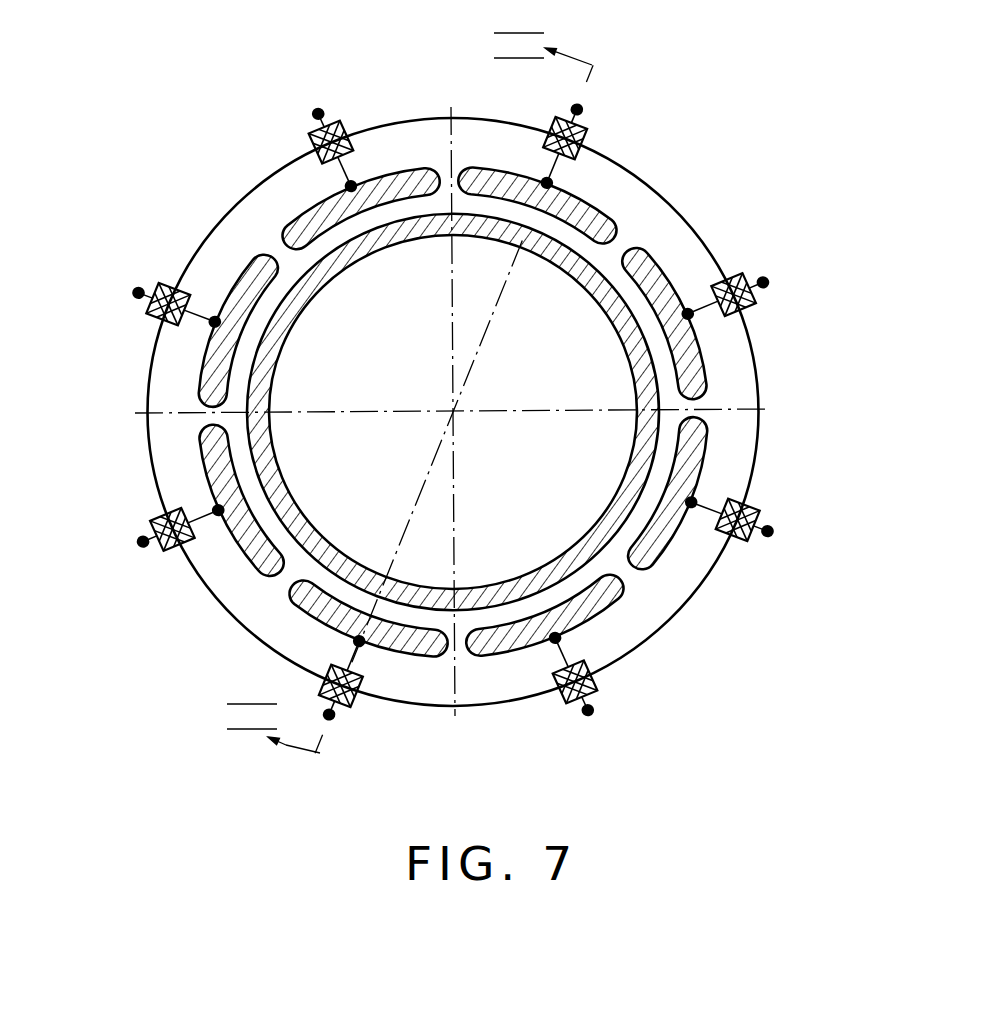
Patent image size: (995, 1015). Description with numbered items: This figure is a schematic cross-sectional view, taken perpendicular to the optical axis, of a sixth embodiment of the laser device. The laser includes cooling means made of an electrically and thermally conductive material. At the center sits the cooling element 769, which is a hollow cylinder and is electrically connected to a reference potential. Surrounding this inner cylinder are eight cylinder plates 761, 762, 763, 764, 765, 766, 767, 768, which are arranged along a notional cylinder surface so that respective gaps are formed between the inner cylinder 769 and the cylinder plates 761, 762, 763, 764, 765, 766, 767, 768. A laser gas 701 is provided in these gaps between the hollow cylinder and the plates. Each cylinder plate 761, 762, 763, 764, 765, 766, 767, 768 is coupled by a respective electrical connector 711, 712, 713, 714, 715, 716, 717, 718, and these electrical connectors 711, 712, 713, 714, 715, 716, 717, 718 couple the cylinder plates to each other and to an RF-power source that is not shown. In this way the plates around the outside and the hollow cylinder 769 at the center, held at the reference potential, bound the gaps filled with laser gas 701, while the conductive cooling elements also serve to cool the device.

The laser gas 701 is at (607, 244).
The cooling element 769 is at (626, 473).
The cylinder plate 761 is at (662, 266).
The cylinder plate 762 is at (708, 447).
The cylinder plate 763 is at (608, 606).
The cylinder plate 764 is at (411, 648).
The cylinder plate 765 is at (236, 540).
The cylinder plate 766 is at (203, 365).
The cylinder plate 767 is at (300, 215).
The cylinder plate 768 is at (489, 168).
The electrical connector 711 is at (797, 240).
The electrical connector 712 is at (800, 524).
The electrical connector 713 is at (610, 732).
The electrical connector 714 is at (335, 749).
The electrical connector 715 is at (117, 552).
The electrical connector 716 is at (119, 304).
The electrical connector 717 is at (287, 104).
The electrical connector 718 is at (642, 86).